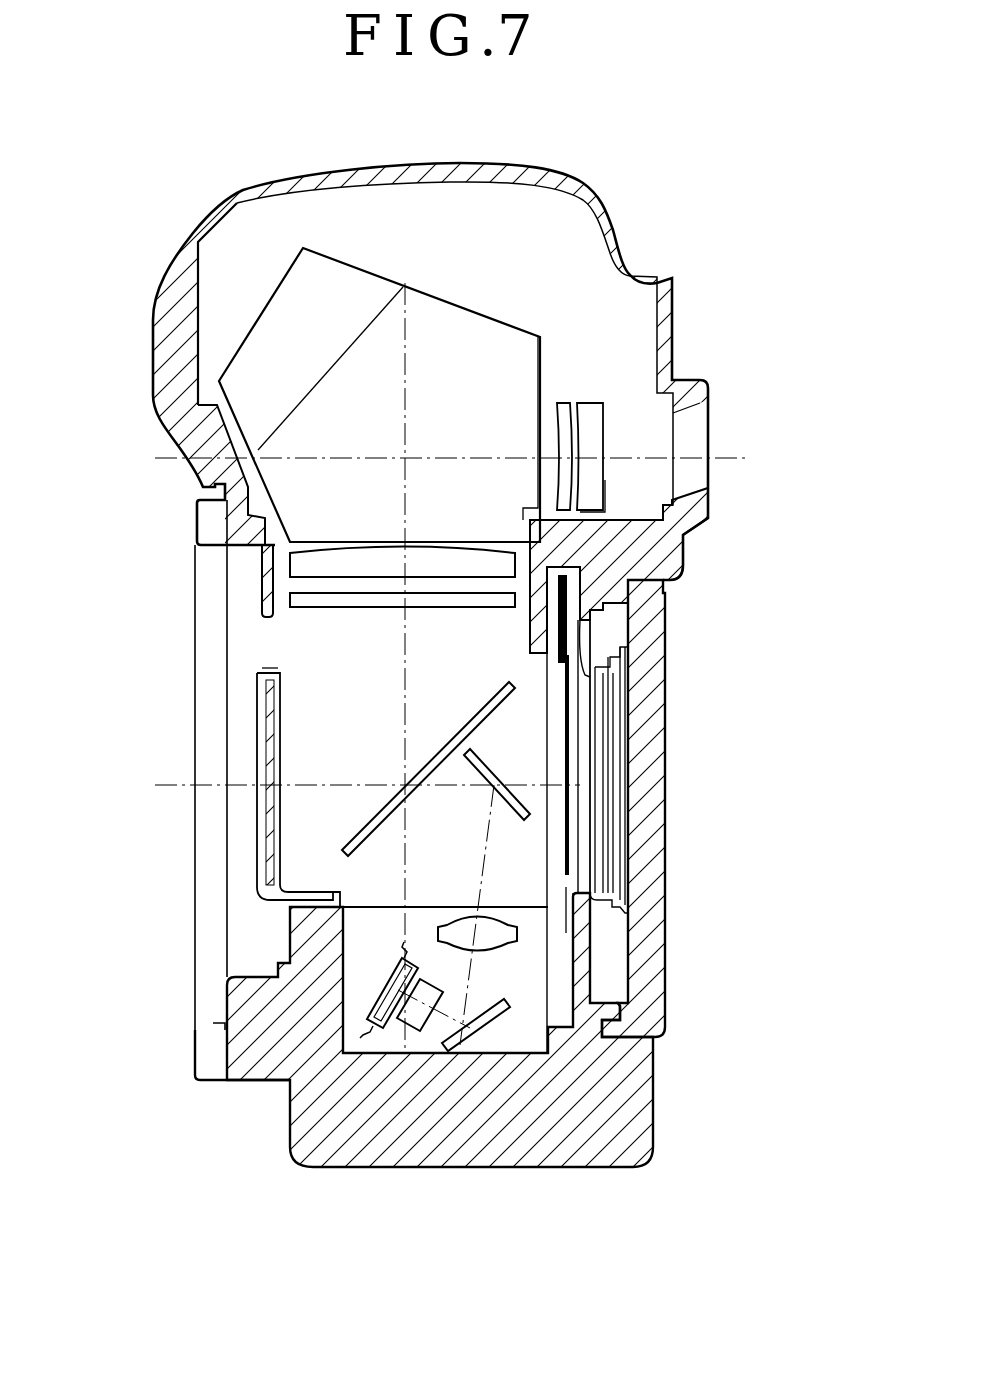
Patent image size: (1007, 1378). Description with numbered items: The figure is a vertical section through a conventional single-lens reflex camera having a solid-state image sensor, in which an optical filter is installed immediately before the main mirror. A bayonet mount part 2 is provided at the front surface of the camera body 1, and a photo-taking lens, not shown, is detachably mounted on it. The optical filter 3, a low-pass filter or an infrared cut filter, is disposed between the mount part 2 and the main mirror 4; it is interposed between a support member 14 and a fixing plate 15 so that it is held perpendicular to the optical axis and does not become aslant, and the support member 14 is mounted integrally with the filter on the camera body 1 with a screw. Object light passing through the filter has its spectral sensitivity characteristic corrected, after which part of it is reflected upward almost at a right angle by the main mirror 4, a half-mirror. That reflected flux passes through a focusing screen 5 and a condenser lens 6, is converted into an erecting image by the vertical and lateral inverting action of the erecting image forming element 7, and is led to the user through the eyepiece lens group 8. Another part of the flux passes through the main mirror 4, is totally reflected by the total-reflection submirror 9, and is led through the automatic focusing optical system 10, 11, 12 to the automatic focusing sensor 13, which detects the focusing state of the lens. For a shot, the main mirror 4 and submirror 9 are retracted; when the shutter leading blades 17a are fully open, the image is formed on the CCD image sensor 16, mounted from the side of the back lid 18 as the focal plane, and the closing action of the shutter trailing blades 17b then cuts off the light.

The camera body 1 is at (668, 314).
The bayonet mount part 2 is at (207, 519).
The optical filter 3 is at (268, 715).
The main mirror 4 is at (378, 827).
The focusing screen 5 is at (328, 600).
The condenser lens 6 is at (296, 568).
The erecting image forming element 7 is at (258, 352).
The eyepiece lens group 8 is at (607, 397).
The total-reflection submirror 9 is at (507, 815).
The automatic focusing optical system element 10 is at (493, 950).
The automatic focusing optical system element 11 is at (468, 1047).
The automatic focusing optical system element 12 is at (420, 1032).
The automatic focusing sensor 13 is at (388, 1030).
The support member 14 is at (265, 900).
The fixing plate 15 is at (280, 680).
The CCD image sensor 16 is at (620, 703).
The shutter leading blades (front curtain) 17a is at (567, 862).
The shutter trailing blades (rear curtain) 17b is at (567, 640).
The back lid 18 is at (650, 898).